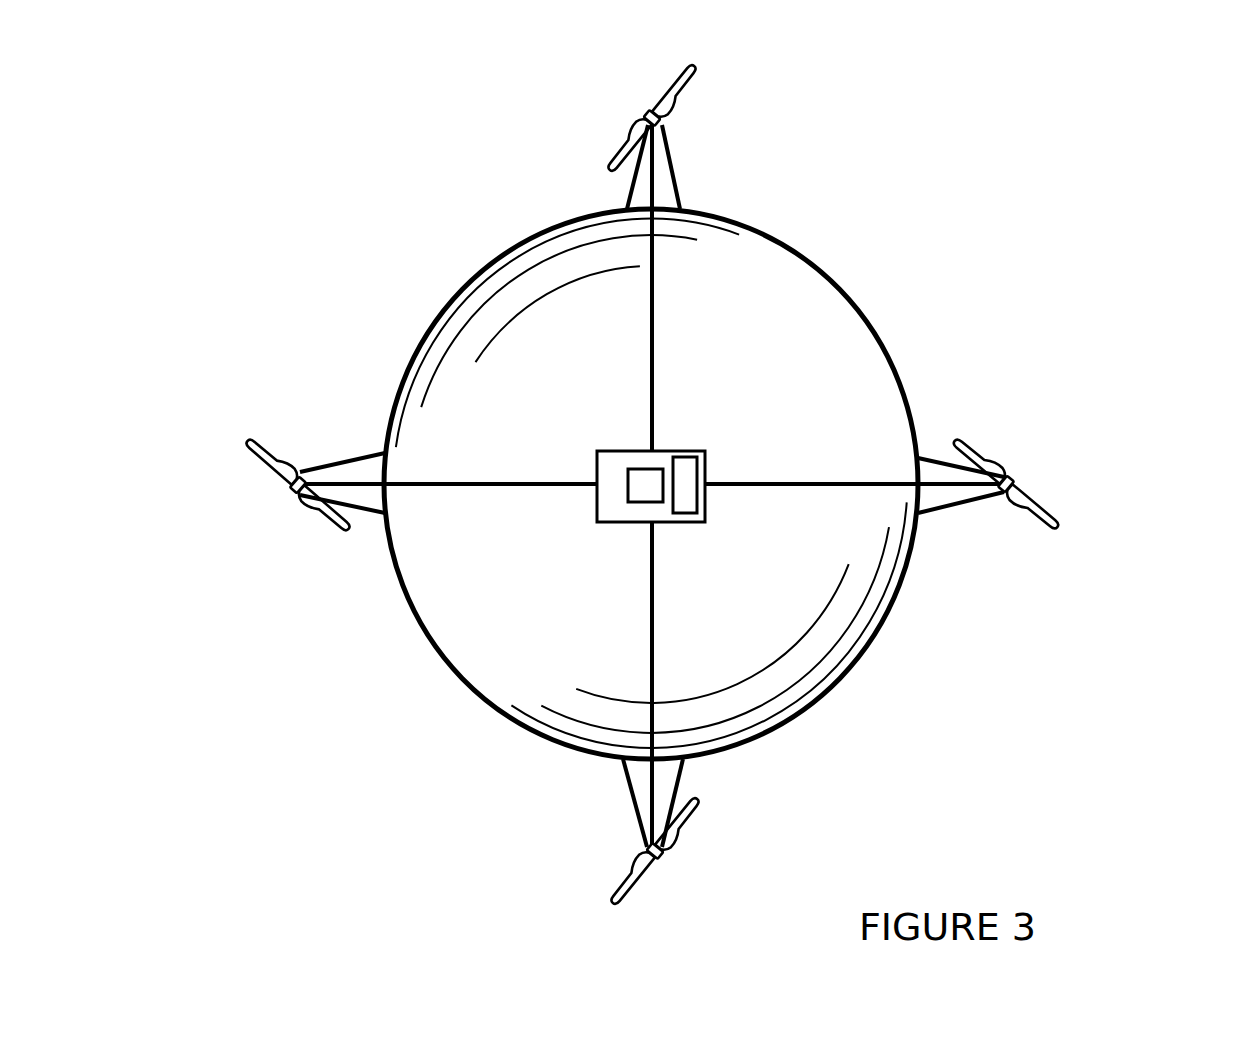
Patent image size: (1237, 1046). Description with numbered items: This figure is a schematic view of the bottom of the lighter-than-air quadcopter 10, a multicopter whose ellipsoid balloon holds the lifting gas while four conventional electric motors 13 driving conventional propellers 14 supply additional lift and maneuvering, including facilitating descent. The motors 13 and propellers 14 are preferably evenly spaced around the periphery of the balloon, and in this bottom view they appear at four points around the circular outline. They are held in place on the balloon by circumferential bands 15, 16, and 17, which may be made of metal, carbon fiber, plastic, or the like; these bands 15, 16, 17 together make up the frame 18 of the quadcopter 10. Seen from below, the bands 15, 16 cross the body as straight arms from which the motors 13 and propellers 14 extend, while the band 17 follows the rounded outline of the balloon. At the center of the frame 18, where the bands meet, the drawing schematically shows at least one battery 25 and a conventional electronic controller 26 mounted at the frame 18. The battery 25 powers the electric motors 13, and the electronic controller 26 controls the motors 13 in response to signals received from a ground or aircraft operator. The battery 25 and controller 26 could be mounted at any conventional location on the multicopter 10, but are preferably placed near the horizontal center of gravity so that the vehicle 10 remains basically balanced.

The quadcopter 10 is at (1042, 193).
The electric motors 13 is at (625, 118).
The propellers 14 is at (656, 101).
The band 15 is at (836, 483).
The band 16 is at (651, 308).
The band 17 is at (450, 668).
The frame 18 is at (694, 437).
The battery 25 is at (642, 492).
The electronic controller 26 is at (690, 502).